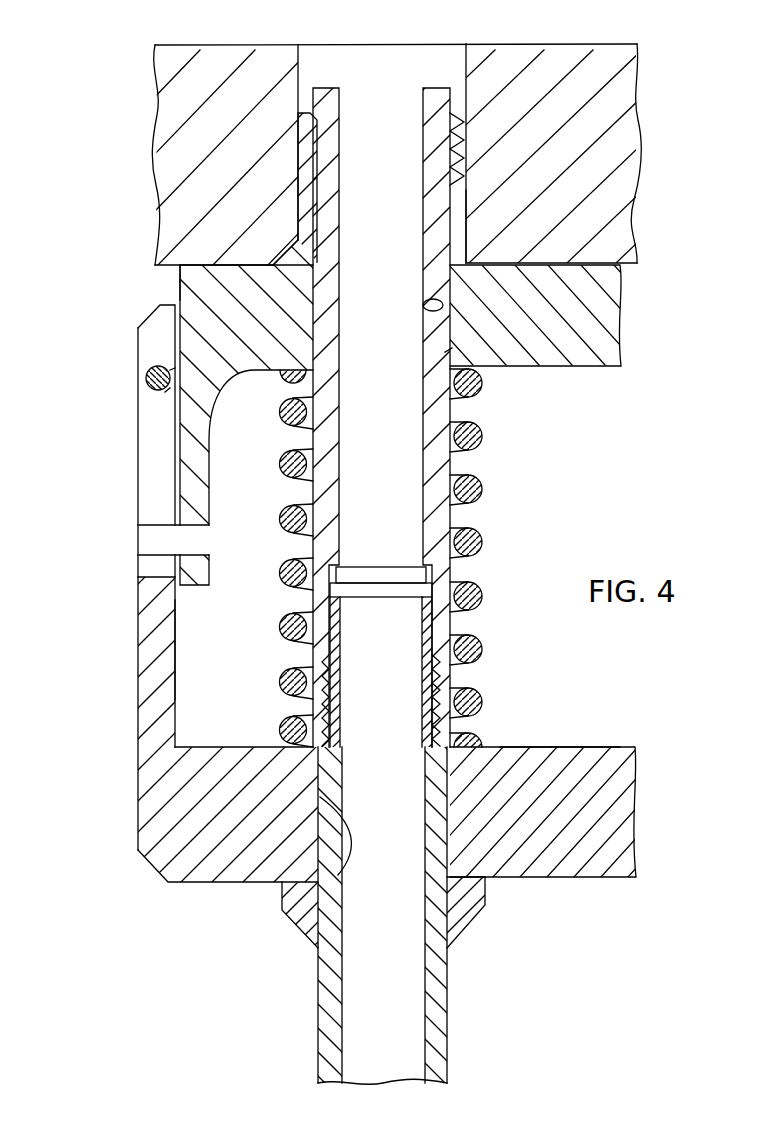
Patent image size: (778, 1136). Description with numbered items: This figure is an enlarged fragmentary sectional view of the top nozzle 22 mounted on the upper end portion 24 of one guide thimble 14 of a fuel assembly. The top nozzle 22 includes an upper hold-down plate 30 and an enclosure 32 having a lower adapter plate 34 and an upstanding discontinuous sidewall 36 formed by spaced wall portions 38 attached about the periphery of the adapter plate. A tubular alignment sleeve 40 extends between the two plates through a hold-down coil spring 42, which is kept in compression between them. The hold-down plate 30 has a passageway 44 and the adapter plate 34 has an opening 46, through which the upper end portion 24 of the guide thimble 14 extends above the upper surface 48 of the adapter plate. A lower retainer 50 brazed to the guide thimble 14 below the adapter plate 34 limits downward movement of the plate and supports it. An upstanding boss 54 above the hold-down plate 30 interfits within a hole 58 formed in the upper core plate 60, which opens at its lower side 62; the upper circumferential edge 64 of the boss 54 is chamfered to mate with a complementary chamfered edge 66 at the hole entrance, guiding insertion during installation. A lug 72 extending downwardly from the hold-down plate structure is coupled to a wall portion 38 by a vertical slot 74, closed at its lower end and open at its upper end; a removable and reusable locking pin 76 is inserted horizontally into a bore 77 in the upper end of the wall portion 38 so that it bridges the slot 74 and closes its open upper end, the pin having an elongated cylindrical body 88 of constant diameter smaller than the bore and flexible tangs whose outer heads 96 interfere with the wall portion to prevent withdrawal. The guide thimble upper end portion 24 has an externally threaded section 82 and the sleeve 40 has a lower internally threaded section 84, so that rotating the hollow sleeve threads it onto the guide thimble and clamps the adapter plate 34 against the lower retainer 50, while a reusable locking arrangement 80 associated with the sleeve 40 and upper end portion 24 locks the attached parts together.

The guide thimble 14 is at (452, 1038).
The top nozzle 22 is at (122, 441).
The upper end portion 24 is at (450, 962).
The upper hold-down plate 30 is at (630, 312).
The enclosure 32 is at (305, 729).
The lower adapter plate 34 is at (632, 802).
The discontinuous sidewall 36 is at (136, 651).
The wall portion 38 is at (146, 679).
The tubular alignment sleeve 40 is at (458, 514).
The hold-down coil spring 42 is at (482, 438).
The passageway 44 is at (450, 292).
The opening 46 is at (338, 875).
The upper surface 48 is at (576, 745).
The lower retainer 50 is at (484, 888).
The boss 54 is at (463, 162).
The hole 58 is at (465, 100).
The upper core plate 60 is at (638, 80).
The lower side 62 is at (167, 272).
The upper circumferential edge 64 is at (300, 112).
The chamfered edge 66 is at (294, 264).
The lug 72 is at (187, 473).
The vertical slot 74 is at (176, 578).
The locking pin 76 is at (140, 392).
The bore 77 is at (146, 380).
The reusable locking arrangement 80 is at (360, 560).
The externally threaded section 82 is at (428, 715).
The internally threaded section 84 is at (472, 688).
The cylindrical body 88 is at (167, 395).
The outer head 96 is at (450, 350).